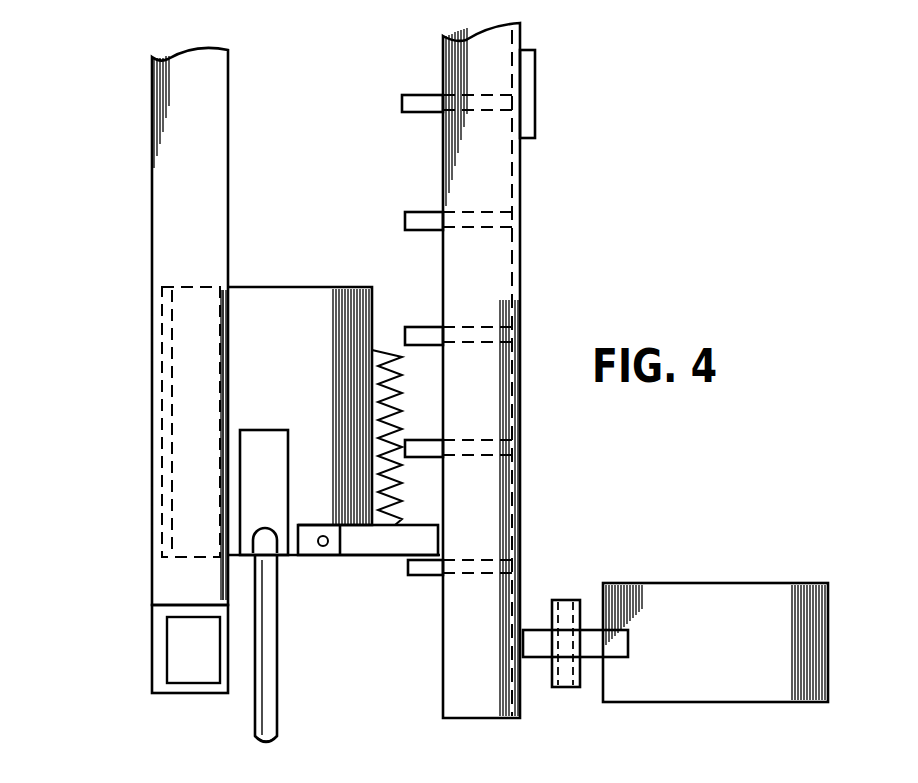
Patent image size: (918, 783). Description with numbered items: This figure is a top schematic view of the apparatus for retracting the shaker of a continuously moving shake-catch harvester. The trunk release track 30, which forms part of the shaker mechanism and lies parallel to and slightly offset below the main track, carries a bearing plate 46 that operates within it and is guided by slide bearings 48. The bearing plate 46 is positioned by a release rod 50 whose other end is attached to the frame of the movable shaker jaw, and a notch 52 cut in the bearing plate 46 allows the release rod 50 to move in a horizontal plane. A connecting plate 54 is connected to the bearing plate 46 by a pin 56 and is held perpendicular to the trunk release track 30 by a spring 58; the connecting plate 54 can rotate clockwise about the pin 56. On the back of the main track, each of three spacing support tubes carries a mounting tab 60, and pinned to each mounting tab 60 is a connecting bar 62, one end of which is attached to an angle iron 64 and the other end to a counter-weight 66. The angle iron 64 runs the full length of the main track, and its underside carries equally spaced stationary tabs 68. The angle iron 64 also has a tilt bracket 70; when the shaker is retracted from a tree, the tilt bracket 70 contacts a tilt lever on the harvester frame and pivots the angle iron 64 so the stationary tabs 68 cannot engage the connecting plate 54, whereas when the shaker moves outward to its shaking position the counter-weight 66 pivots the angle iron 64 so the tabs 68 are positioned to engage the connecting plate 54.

The trunk release track 30 is at (212, 235).
The bearing plate 46 is at (316, 300).
The slide bearings 48 is at (180, 387).
The release rod 50 is at (272, 650).
The notch 52 is at (276, 554).
The connecting plate 54 is at (366, 546).
The pin 56 is at (318, 521).
The spring 58 is at (395, 426).
The mounting tab 60 is at (565, 689).
The connecting bar 62 is at (598, 637).
The angle iron 64 is at (505, 280).
The counter-weight 66 is at (672, 600).
The stationary tabs 68 is at (420, 218).
The tilt bracket 70 is at (535, 88).